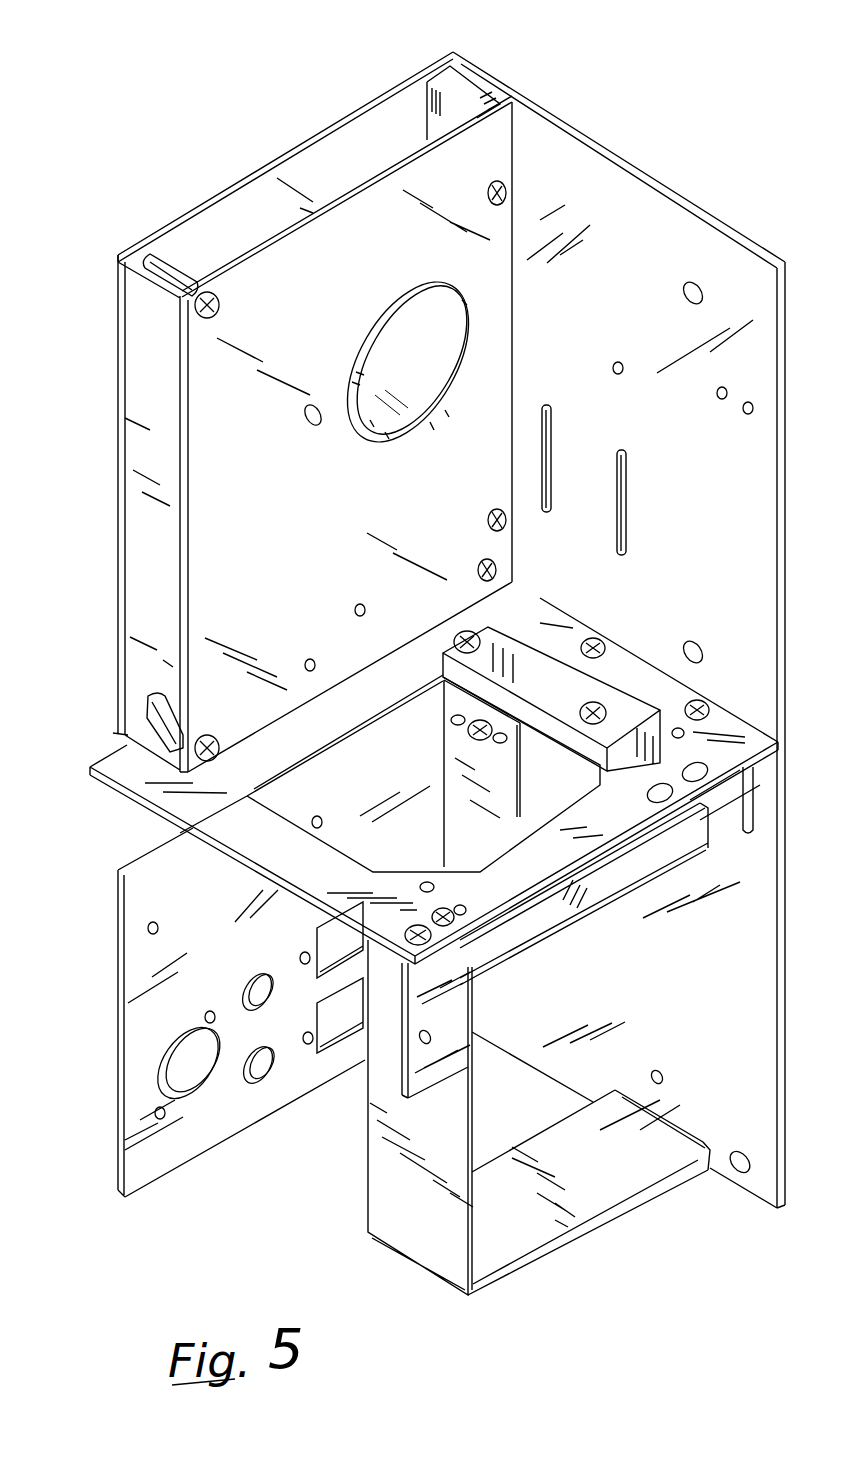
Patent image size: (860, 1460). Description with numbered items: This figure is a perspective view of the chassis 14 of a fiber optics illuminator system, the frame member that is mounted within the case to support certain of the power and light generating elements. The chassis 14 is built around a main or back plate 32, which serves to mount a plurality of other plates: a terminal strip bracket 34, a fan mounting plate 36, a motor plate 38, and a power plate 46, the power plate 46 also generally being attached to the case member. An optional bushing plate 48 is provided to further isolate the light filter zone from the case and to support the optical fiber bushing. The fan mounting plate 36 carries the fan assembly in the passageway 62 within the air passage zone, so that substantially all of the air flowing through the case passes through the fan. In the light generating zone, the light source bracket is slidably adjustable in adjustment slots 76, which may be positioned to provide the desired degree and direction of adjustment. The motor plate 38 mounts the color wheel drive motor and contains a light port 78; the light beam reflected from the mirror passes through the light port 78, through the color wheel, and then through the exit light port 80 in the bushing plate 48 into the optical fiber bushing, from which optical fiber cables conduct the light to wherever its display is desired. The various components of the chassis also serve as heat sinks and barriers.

The chassis 14 is at (485, 76).
The back plate 32 is at (728, 534).
The terminal strip bracket 34 is at (443, 1263).
The fan mounting plate 36 is at (165, 793).
The motor plate 38 is at (290, 622).
The power plate 46 is at (230, 953).
The bushing plate 48 is at (148, 518).
The passageway 62 is at (352, 860).
The adjustment slots 76 is at (615, 465).
The light port 78 is at (440, 405).
The exit light port 80 is at (426, 328).